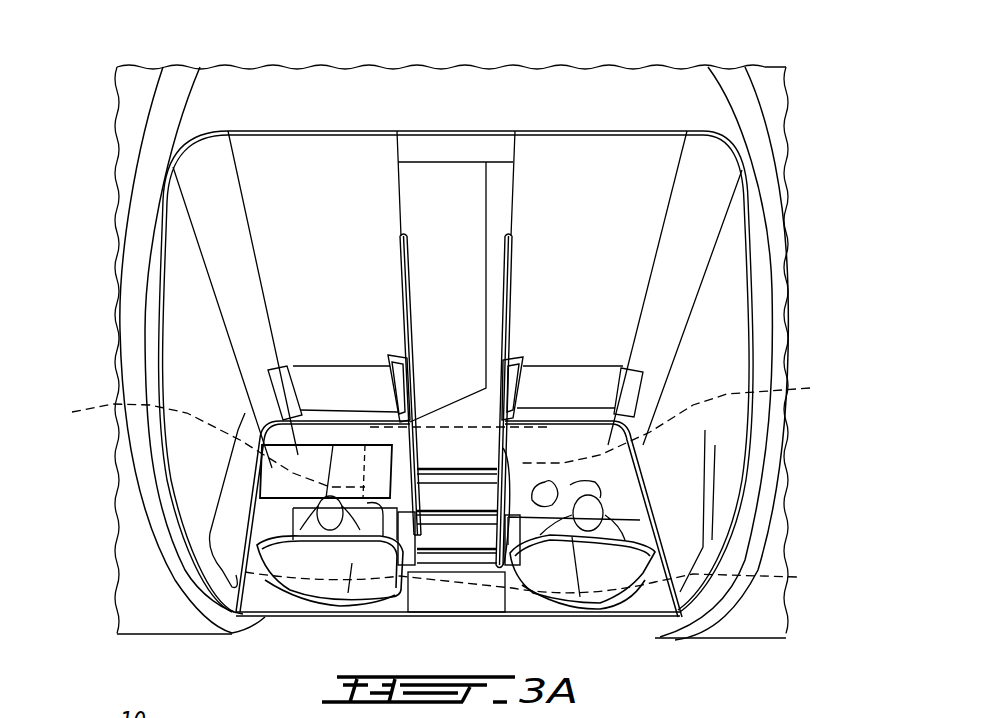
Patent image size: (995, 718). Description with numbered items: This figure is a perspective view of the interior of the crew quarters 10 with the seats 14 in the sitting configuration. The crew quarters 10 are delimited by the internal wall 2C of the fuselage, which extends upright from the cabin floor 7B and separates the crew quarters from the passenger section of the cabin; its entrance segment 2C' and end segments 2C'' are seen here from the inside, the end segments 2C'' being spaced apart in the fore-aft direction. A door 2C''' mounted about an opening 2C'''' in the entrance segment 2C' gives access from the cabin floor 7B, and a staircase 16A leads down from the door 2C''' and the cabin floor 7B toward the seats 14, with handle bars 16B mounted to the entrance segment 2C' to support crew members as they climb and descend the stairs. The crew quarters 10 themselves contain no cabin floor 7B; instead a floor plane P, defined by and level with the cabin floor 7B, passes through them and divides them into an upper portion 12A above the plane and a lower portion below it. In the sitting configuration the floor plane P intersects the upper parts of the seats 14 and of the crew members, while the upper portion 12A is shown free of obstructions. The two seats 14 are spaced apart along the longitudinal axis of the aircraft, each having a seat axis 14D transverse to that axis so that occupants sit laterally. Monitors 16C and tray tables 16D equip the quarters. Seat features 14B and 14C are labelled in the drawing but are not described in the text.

The crew quarters 10 is at (190, 165).
The internal wall 2C is at (456, 320).
The entrance segment 2C' is at (647, 258).
The end segments 2C'' is at (463, 299).
The door 2C''' is at (456, 153).
The opening 2C'''' is at (489, 224).
The cabin floor 7B is at (485, 403).
The upper portion 12A is at (730, 338).
The seats 14 is at (255, 527).
The table 14B is at (513, 523).
The seat 14C is at (301, 572).
The seat axis 14D is at (439, 431).
The staircase 16A is at (466, 438).
The handle bars 16B is at (399, 262).
The monitors 16C is at (347, 385).
The tray tables 16D is at (273, 450).
The floor plane P is at (529, 578).